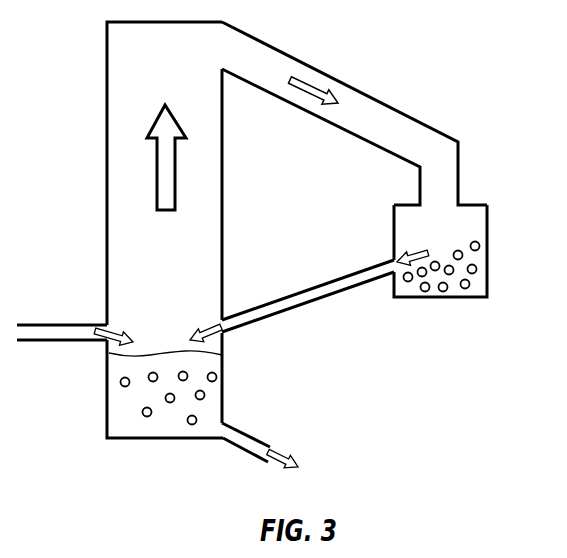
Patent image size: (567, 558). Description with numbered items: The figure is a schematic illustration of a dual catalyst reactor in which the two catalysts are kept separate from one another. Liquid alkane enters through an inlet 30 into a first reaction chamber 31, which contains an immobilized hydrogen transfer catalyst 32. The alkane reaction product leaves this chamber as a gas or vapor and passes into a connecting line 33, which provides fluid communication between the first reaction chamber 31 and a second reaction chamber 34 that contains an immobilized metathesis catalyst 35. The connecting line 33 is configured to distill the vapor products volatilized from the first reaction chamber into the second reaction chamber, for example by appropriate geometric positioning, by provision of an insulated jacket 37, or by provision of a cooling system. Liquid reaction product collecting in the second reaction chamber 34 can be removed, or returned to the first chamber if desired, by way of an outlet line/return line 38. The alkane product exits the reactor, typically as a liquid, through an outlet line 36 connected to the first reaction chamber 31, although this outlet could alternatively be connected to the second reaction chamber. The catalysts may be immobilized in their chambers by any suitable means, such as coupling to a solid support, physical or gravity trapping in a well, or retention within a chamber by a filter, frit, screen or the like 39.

The inlet 30 is at (55, 325).
The first reaction chamber 31 is at (107, 86).
The immobilized hydrogen transfer catalyst 32 is at (143, 414).
The connecting line 33 is at (393, 100).
The second reaction chamber 34 is at (487, 207).
The immobilized metathesis catalyst 35 is at (478, 258).
The outlet line 36 is at (243, 430).
The insulated jacket 37 is at (312, 77).
The outlet line/return line 38 is at (309, 305).
The filter, frit, screen or the like 39 is at (374, 270).